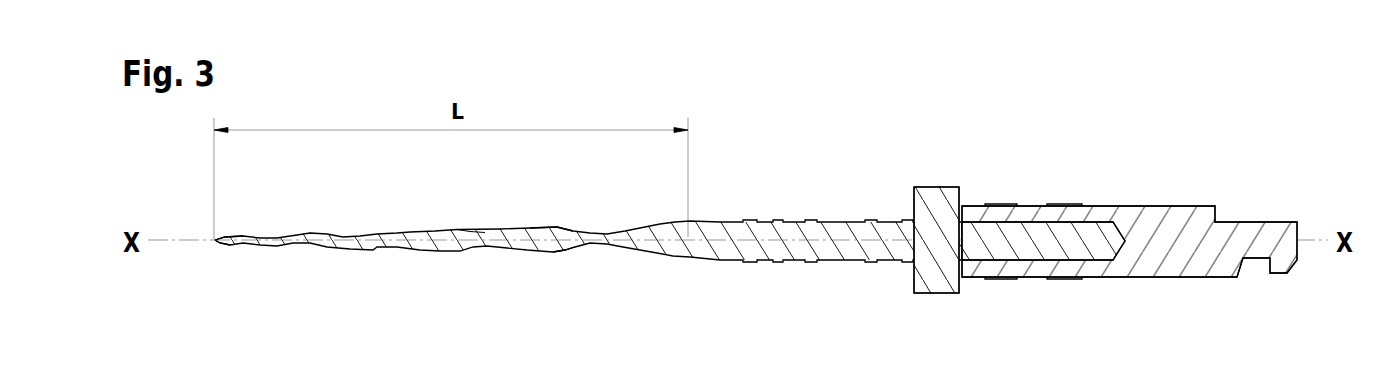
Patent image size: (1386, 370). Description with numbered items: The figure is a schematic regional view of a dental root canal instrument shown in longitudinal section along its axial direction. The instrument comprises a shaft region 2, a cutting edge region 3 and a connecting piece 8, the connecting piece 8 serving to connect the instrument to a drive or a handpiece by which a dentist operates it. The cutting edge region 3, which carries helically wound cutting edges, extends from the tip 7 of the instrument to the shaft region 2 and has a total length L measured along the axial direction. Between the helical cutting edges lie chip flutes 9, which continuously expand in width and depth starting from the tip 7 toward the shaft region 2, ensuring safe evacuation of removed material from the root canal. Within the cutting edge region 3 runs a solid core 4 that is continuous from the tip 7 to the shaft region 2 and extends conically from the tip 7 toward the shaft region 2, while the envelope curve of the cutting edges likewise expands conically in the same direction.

The shaft region 2 is at (782, 222).
The cutting edge region 3 is at (399, 232).
The core 4 is at (572, 250).
The tip 7 is at (214, 239).
The connecting piece 8 is at (1137, 212).
The chip flutes 9 is at (570, 232).